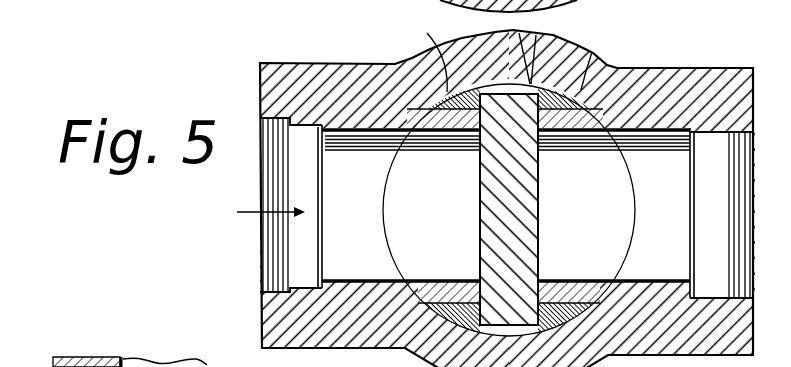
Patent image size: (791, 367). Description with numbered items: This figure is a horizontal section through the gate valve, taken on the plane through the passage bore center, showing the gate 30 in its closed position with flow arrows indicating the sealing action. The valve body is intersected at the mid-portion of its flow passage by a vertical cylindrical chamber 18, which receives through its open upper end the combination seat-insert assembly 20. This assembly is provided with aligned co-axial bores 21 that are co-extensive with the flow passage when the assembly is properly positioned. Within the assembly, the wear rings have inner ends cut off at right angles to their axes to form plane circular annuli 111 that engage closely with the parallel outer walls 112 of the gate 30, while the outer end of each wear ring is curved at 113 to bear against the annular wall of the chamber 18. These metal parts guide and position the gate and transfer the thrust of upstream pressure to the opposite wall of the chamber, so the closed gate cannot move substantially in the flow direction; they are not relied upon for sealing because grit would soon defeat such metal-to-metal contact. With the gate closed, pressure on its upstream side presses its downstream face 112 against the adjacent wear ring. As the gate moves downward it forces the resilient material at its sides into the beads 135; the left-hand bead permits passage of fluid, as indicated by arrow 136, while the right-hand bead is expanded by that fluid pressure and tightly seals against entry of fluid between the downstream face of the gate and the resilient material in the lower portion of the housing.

The chamber 18 is at (418, 41).
The beads 135 is at (549, 36).
The seat-insert assembly 20 is at (594, 52).
The arrow 136 is at (478, 152).
The curved outer end wall 113 is at (633, 136).
The gate 30 is at (528, 195).
The bores 21 is at (438, 221).
The outer walls of the gate 112 is at (480, 235).
The circular annuli 111 is at (538, 275).